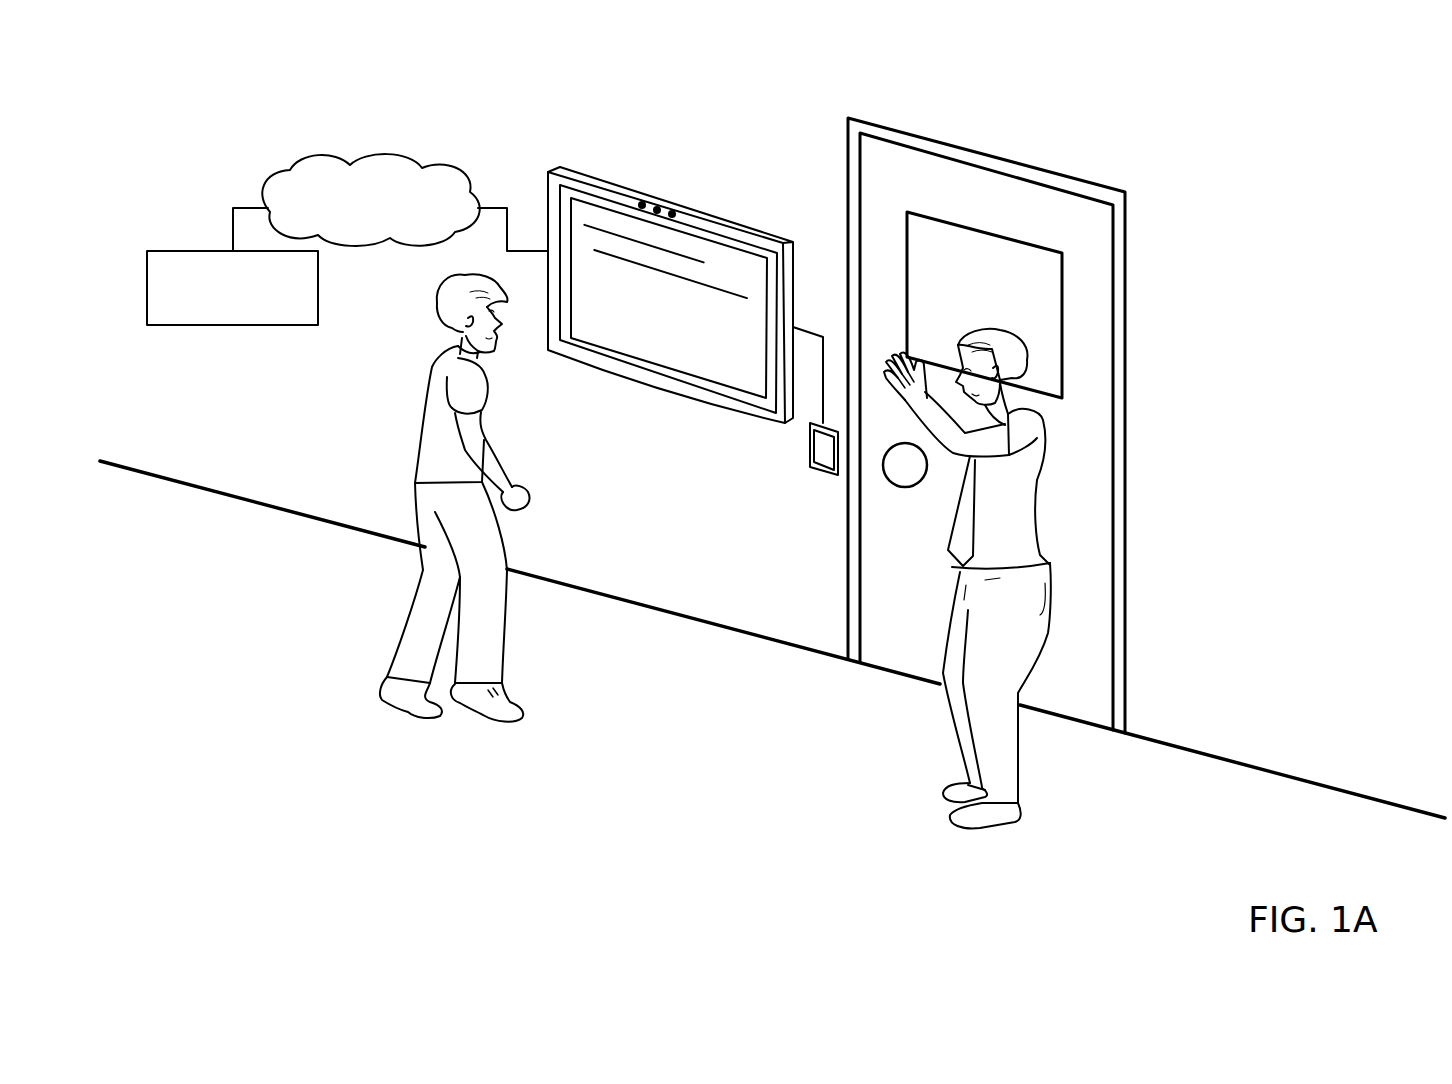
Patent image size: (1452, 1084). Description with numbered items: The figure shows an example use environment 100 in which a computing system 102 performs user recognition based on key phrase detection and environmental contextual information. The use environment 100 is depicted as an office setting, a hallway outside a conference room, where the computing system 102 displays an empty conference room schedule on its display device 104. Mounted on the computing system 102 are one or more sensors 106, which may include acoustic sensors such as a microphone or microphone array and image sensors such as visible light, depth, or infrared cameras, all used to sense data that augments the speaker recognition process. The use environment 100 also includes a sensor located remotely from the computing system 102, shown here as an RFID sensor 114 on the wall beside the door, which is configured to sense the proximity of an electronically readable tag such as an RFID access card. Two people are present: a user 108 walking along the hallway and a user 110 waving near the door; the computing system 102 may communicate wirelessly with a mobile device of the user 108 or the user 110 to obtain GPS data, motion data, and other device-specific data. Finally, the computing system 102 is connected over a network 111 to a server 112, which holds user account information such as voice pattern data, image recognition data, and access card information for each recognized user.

The use environment 100 is at (1356, 93).
The computing system 102 is at (749, 155).
The display device 104 is at (754, 236).
The sensors 106 is at (667, 188).
The user 108 is at (426, 386).
The user 110 is at (1045, 481).
The network 111 is at (426, 160).
The server 112 is at (217, 316).
The RFID sensor 114 is at (824, 468).